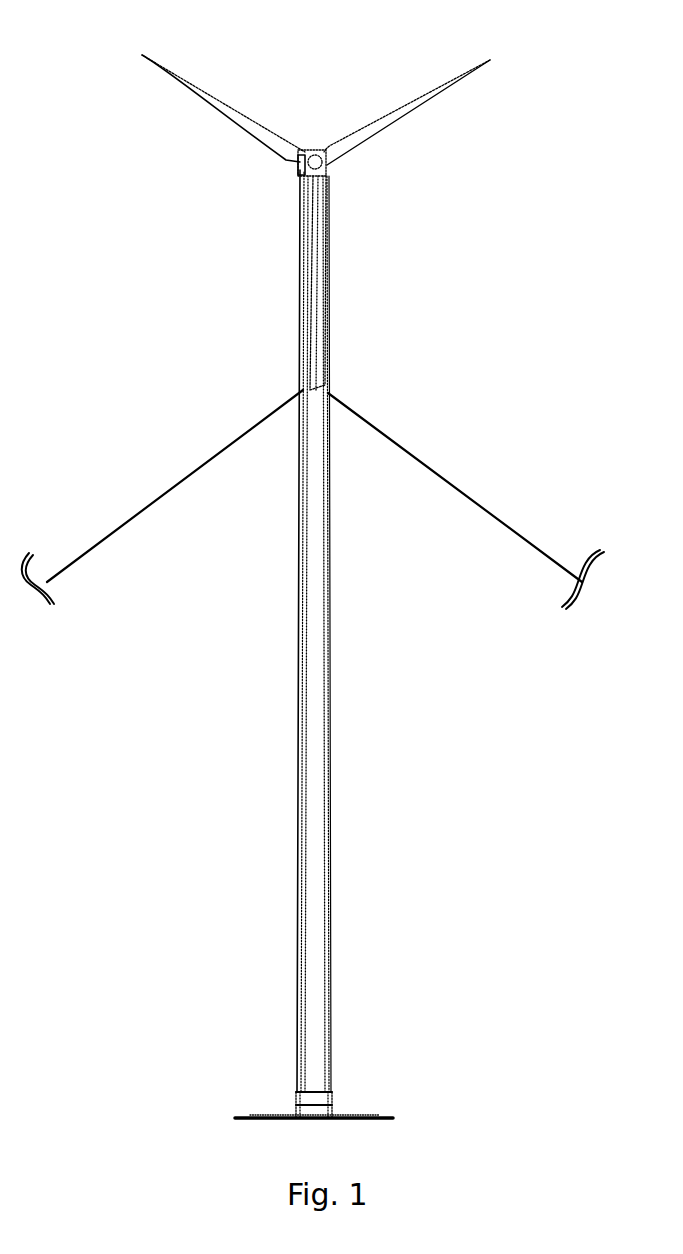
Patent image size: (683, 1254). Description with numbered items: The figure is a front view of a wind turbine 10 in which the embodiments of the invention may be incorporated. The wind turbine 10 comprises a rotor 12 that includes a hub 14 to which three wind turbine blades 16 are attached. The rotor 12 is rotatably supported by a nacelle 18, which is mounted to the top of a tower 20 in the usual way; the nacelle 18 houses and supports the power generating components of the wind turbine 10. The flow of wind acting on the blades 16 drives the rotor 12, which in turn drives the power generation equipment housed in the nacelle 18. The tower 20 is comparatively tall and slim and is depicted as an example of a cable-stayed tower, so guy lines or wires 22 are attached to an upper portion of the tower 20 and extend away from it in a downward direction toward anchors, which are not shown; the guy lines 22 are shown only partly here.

The wind turbine 10 is at (588, 60).
The rotor 12 is at (234, 192).
The hub 14 is at (318, 168).
The wind turbine blades 16 is at (210, 110).
The nacelle 18 is at (323, 157).
The tower 20 is at (318, 568).
The guy lines or wires 22 is at (165, 498).